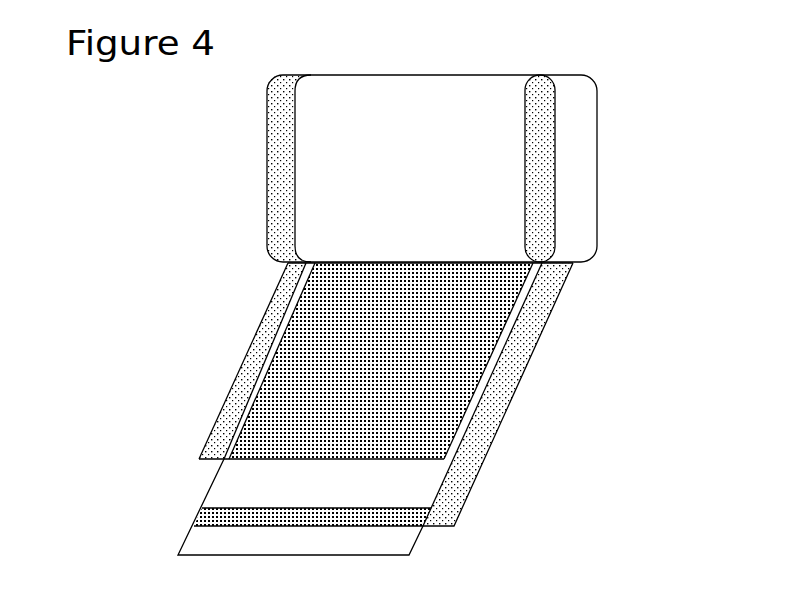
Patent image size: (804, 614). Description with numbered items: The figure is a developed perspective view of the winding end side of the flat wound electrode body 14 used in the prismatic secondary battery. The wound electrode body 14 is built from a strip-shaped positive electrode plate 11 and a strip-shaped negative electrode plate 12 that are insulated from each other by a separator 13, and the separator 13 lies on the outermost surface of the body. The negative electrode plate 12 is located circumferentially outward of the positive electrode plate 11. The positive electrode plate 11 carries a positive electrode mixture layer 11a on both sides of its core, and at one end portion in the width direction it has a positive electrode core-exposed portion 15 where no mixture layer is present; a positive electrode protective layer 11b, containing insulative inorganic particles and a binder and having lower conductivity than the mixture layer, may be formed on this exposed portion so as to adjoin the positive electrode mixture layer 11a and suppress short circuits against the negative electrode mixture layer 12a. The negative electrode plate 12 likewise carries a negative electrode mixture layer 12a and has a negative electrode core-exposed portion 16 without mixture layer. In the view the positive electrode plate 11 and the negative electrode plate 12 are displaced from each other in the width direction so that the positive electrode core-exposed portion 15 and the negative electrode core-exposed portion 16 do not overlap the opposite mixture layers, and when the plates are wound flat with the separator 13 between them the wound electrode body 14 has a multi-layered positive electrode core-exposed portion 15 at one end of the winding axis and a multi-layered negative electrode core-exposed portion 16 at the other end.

The positive electrode plate 11 is at (347, 294).
The positive electrode mixture layer 11a is at (325, 342).
The positive electrode protective layer 11b is at (260, 382).
The negative electrode plate 12 is at (533, 315).
The negative electrode mixture layer 12a is at (400, 516).
The separator 13 is at (495, 123).
The wound electrode body 14 is at (267, 147).
The positive electrode core-exposed portion 15 is at (278, 210).
The negative electrode core-exposed portion 16 is at (540, 170).